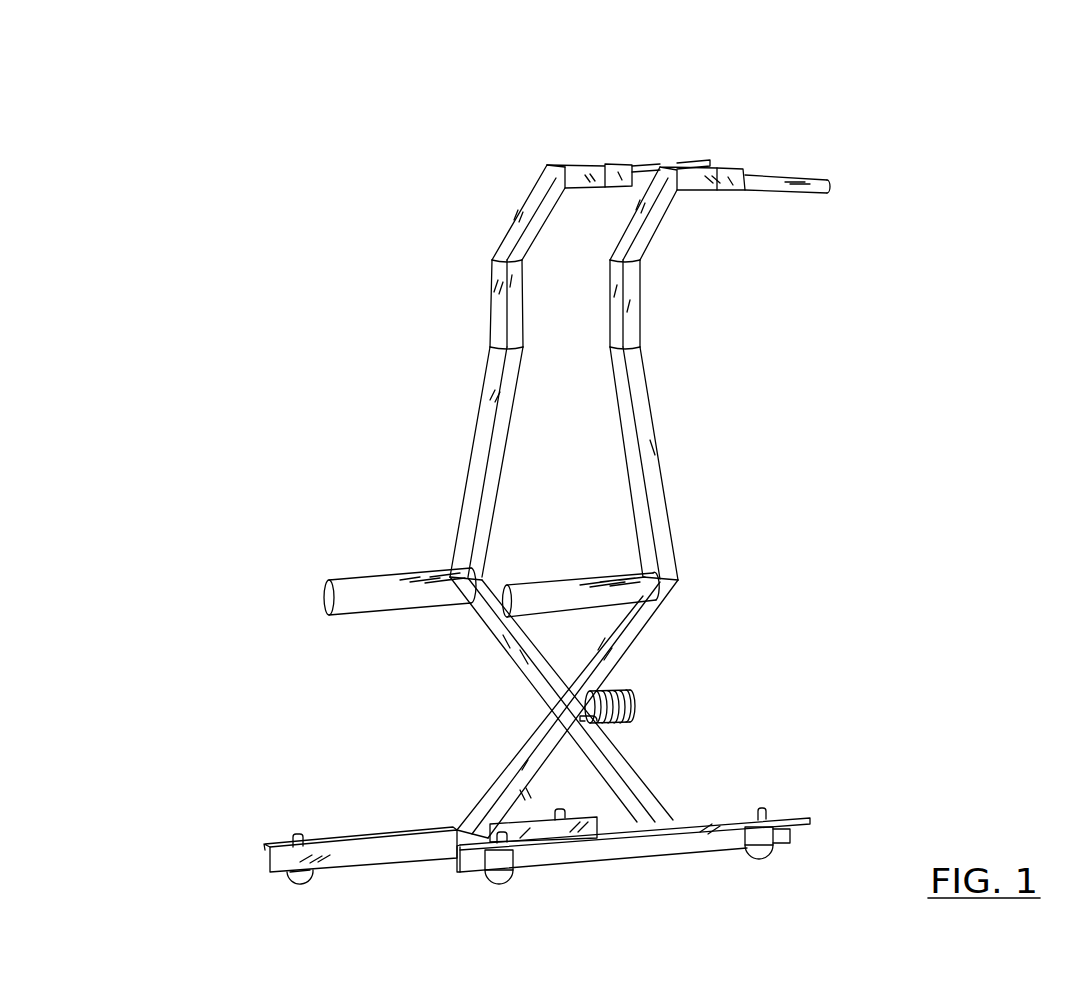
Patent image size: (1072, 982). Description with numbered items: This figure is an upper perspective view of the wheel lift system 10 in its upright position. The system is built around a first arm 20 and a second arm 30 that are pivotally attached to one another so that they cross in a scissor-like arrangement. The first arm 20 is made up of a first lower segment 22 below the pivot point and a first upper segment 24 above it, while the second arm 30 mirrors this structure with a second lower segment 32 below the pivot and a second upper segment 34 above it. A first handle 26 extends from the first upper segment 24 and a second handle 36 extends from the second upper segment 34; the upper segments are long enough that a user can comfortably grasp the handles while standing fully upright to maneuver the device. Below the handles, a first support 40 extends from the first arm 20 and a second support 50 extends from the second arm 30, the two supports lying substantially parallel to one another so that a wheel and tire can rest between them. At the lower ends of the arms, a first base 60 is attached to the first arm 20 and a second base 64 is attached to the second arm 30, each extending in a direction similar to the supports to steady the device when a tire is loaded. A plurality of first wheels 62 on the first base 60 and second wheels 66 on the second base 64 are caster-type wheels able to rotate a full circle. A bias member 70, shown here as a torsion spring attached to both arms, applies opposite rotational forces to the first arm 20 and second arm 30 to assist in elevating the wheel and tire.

The wheel lift system 10 is at (880, 110).
The first arm 20 is at (473, 625).
The first lower segment 22 is at (510, 662).
The first upper segment 24 is at (470, 457).
The first handle 26 is at (652, 163).
The second arm 30 is at (665, 605).
The second lower segment 32 is at (645, 627).
The second upper segment 34 is at (655, 412).
The second handle 36 is at (812, 197).
The first support 40 is at (367, 572).
The second support 50 is at (593, 578).
The first base 60 is at (363, 835).
The first wheels 62 is at (290, 884).
The second base 64 is at (718, 820).
The second wheels 66 is at (485, 880).
The bias member 70 is at (640, 717).